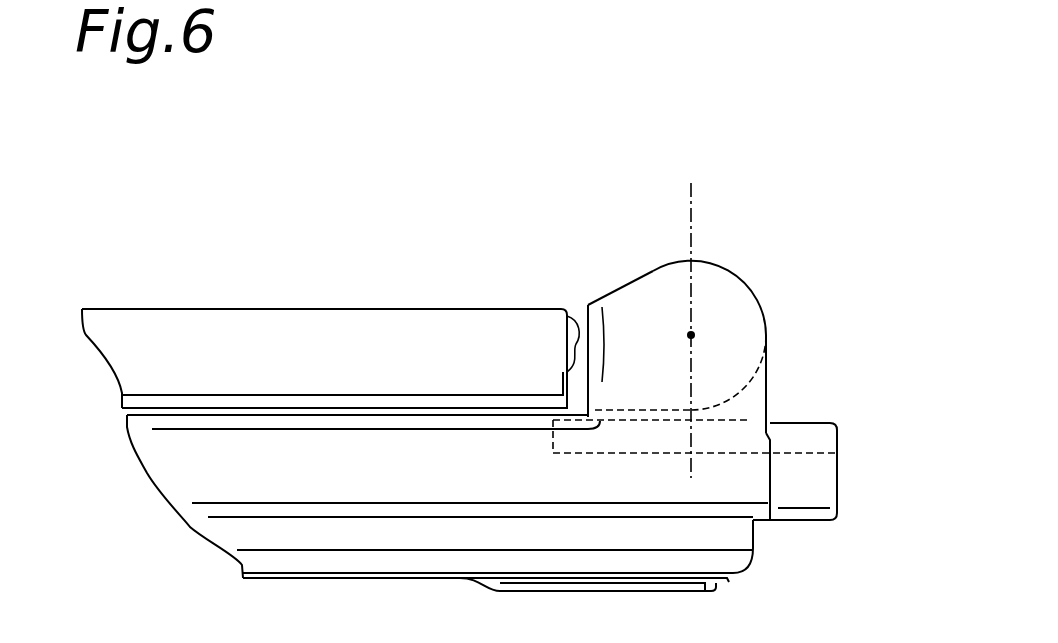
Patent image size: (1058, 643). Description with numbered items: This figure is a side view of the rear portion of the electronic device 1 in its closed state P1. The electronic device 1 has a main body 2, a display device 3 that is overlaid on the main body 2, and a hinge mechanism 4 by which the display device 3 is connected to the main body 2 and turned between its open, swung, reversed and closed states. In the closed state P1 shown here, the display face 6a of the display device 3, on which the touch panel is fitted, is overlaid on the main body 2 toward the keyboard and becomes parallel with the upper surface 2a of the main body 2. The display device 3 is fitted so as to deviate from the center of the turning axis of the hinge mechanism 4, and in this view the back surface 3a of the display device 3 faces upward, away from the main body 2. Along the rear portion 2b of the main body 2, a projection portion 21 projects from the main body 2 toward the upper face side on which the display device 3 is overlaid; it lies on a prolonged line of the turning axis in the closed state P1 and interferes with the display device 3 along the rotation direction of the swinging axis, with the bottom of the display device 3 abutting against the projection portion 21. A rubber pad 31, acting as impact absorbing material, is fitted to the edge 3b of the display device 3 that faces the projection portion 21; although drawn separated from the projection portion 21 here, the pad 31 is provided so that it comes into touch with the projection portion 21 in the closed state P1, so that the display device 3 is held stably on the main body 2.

The electronic device 1 is at (416, 175).
The main body 2 is at (207, 478).
The upper surface of main body 2a is at (296, 405).
The rear portion of main body 2b is at (777, 481).
The display device 3 is at (341, 323).
The back surface of display device 3a is at (424, 310).
The edge of display device 3b is at (583, 340).
The hinge mechanism 4 is at (808, 365).
The display face 6a is at (167, 408).
The projection portion 21 is at (657, 268).
The rubber pad 31 is at (585, 305).
The closed state P1 is at (206, 296).